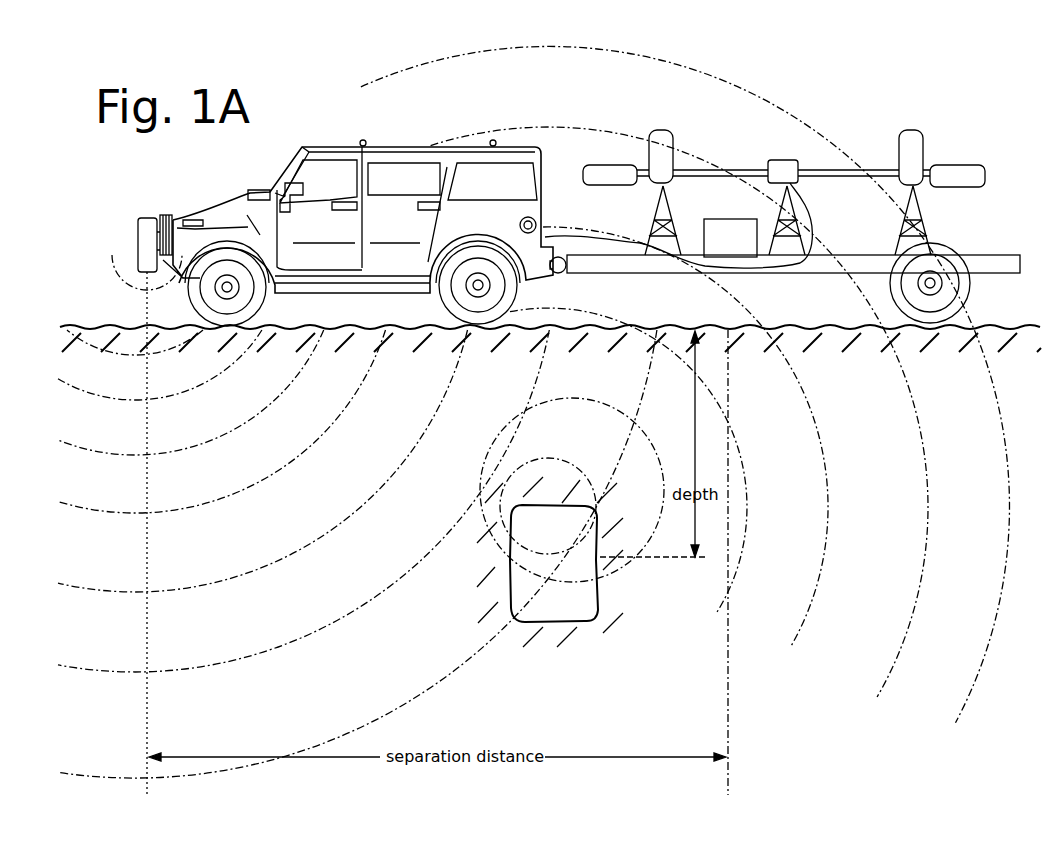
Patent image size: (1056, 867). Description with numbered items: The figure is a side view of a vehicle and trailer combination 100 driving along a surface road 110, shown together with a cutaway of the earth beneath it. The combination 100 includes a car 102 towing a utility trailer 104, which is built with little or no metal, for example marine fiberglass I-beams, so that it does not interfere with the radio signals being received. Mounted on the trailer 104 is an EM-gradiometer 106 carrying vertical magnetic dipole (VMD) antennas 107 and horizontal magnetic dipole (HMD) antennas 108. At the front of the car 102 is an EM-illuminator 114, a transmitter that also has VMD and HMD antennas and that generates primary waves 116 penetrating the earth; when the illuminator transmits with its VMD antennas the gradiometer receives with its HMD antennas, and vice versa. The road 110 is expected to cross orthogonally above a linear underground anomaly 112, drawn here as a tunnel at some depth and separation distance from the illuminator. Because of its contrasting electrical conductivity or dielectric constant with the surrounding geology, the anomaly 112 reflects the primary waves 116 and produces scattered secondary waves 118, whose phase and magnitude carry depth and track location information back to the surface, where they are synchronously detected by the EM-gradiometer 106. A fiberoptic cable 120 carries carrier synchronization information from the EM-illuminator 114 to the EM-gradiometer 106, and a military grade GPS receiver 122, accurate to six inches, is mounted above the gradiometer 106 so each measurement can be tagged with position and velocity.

The vehicle and trailer combination 100 is at (838, 58).
The car 102 is at (333, 145).
The utility trailer 104 is at (1008, 256).
The EM-gradiometer 106 is at (768, 164).
The vertical magnetic dipole (VMD) antenna 107 is at (664, 142).
The horizontal magnetic dipole (HMD) antenna 108 is at (610, 164).
The surface road 110 is at (323, 324).
The linear underground anomalies 112 is at (583, 608).
The EM-illuminator 114 is at (140, 250).
The primary waves 116 is at (323, 435).
The scattered (secondary) waves 118 is at (565, 397).
The fiberoptic cable 120 is at (588, 231).
The GPS receiver 122 is at (732, 217).